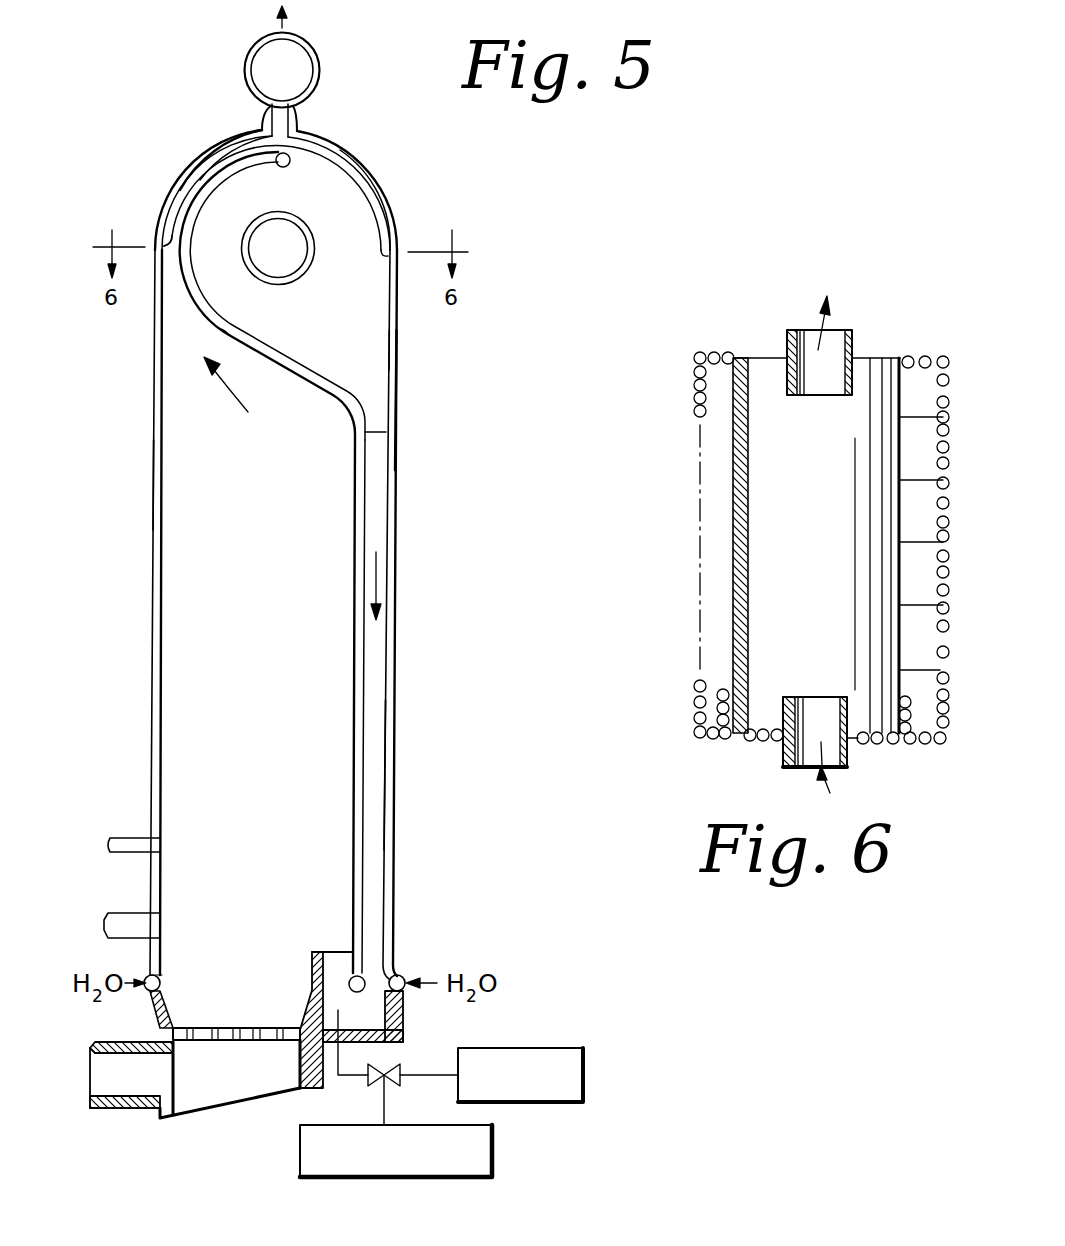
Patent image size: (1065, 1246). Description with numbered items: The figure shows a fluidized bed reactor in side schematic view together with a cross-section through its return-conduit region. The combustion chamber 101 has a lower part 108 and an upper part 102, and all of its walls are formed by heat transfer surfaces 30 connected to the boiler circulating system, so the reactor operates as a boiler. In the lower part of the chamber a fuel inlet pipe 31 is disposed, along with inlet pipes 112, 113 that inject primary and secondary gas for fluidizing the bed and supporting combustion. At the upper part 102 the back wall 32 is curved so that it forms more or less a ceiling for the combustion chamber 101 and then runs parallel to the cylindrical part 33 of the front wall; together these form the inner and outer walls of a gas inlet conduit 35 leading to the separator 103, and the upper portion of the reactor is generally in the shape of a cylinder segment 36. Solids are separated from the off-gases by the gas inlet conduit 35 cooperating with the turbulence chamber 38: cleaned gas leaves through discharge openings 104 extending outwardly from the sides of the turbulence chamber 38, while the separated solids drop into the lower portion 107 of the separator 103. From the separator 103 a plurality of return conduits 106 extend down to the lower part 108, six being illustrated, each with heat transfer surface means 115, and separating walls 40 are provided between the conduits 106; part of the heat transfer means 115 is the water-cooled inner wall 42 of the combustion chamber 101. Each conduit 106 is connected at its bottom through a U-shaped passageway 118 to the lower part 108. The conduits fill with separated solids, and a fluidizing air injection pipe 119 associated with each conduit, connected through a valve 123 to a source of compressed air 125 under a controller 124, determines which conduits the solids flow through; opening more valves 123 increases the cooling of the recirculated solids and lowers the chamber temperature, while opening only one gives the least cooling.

In FIG. 5, the heat transfer surfaces 30 is at (153, 607).
In FIG. 6, the heat transfer surfaces 30 is at (690, 705).
In FIG. 5, the fuel inlet pipe 31 is at (118, 917).
In FIG. 5, the back wall 32 is at (297, 370).
In FIG. 6, the back wall 32 is at (820, 524).
In FIG. 5, the cylindrical part of the front wall 33 is at (212, 152).
In FIG. 5, the gas inlet conduit 35 is at (178, 200).
In FIG. 5, the cylinder segment upper portion 36 is at (307, 125).
In FIG. 5, the turbulence chamber 38 is at (360, 205).
In FIG. 6, the separating walls 40 is at (915, 420).
In FIG. 5, the inner wall of the combustion chamber 42 is at (363, 630).
In FIG. 5, the combustion chamber 101 is at (175, 477).
In FIG. 5, the upper part of the combustion chamber 102 is at (170, 268).
In FIG. 5, the separator 103 is at (327, 173).
In FIG. 6, the separator 103 is at (862, 378).
In FIG. 5, the discharge openings 104 is at (295, 260).
In FIG. 6, the discharge openings 104 is at (795, 338).
In FIG. 5, the return conduits 106 is at (383, 790).
In FIG. 6, the return conduits 106 is at (923, 383).
In FIG. 5, the lower portion of the separator 107 is at (378, 347).
In FIG. 5, the lower part of the combustion chamber 108 is at (173, 968).
In FIG. 5, the inlet pipe 112 is at (132, 1093).
In FIG. 5, the inlet pipe 113 is at (125, 843).
In FIG. 5, the heat transfer surface means 115 is at (397, 455).
In FIG. 6, the heat transfer surface means 115 is at (945, 722).
In FIG. 5, the U-shaped passageway 118 is at (370, 1010).
In FIG. 5, the fluidizing air injection pipe 119 is at (337, 1063).
In FIG. 5, the valve 123 is at (398, 1067).
In FIG. 5, the controller 124 is at (362, 1177).
In FIG. 5, the source of compressed air 125 is at (583, 1076).